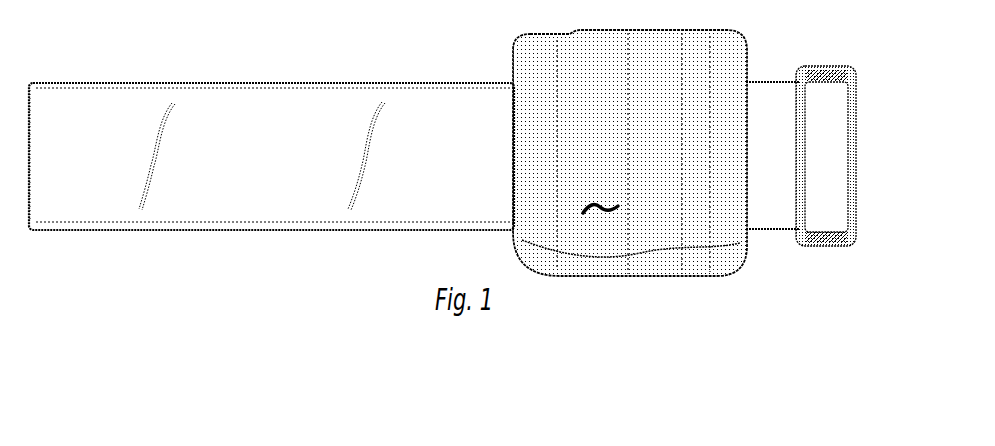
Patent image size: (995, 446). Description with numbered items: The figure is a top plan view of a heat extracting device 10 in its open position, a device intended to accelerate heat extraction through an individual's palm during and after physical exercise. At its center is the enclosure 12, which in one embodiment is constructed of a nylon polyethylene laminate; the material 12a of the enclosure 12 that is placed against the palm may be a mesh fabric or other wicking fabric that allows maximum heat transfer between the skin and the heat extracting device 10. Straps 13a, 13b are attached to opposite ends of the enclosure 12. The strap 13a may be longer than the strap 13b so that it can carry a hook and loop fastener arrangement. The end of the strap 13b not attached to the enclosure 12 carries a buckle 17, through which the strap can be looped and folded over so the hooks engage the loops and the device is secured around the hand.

The heat extracting device 10 is at (262, 250).
The enclosure 12 is at (675, 297).
The material of the enclosure placed against the palm 12a is at (600, 216).
The strap 13a is at (108, 178).
The strap 13b is at (762, 202).
The buckle 17 is at (850, 250).